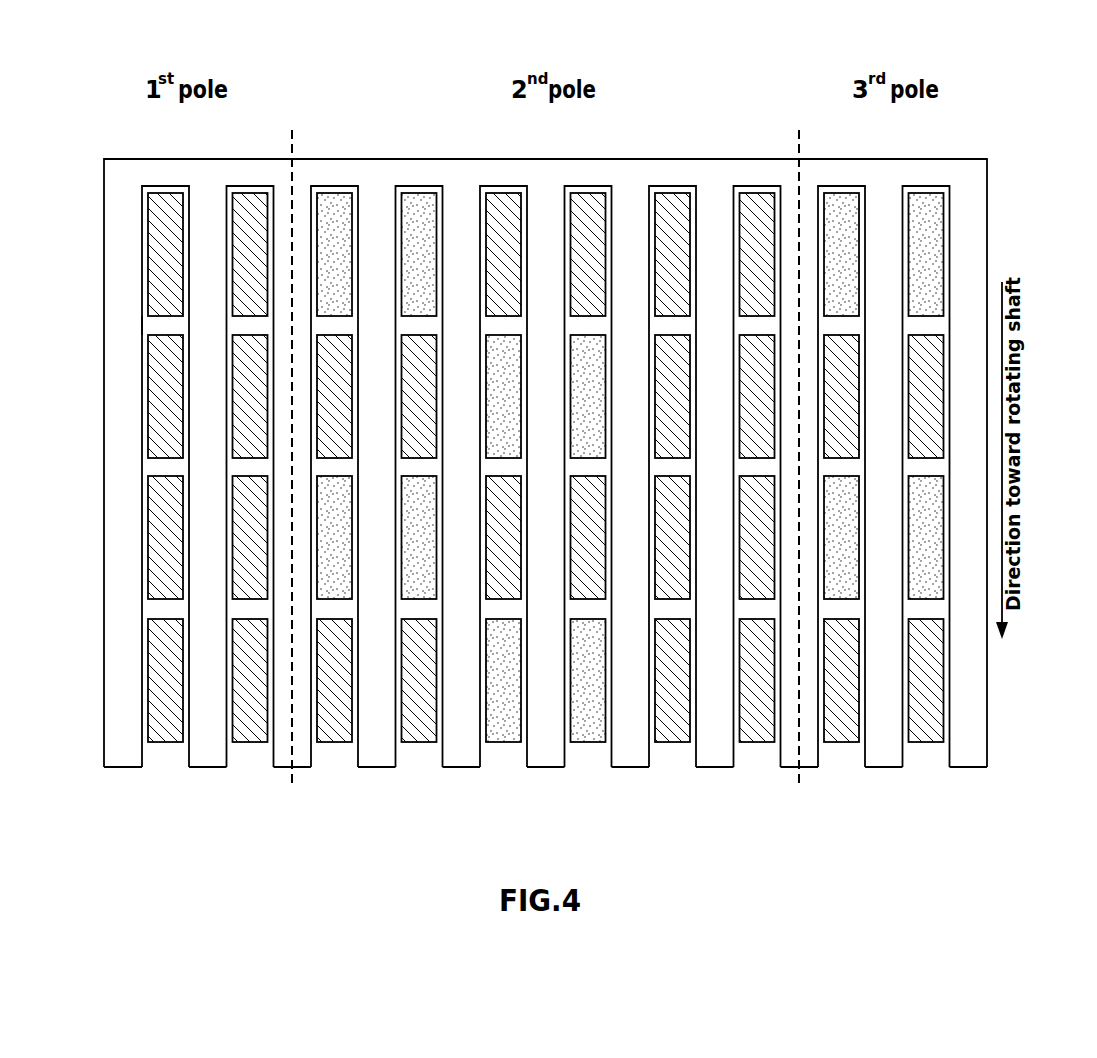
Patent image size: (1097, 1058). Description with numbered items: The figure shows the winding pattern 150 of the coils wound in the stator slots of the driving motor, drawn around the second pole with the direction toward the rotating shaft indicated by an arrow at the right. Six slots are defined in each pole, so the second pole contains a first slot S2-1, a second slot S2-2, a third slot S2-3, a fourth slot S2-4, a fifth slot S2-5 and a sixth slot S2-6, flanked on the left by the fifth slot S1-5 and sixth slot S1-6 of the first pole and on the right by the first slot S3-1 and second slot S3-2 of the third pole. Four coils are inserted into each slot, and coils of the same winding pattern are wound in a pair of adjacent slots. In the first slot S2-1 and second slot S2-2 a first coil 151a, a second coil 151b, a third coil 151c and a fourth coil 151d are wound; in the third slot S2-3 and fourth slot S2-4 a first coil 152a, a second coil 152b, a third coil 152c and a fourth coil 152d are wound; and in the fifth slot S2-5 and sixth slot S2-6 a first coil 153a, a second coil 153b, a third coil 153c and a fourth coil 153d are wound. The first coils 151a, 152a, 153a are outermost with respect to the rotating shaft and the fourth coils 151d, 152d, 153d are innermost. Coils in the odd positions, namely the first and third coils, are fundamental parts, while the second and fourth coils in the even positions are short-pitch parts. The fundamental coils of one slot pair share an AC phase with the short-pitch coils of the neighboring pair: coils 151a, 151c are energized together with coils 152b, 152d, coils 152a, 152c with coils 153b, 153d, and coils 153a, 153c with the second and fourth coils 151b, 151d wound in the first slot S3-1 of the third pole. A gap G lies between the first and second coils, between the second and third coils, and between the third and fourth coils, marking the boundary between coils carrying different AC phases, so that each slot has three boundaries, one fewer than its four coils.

The winding pattern 150 is at (980, 58).
The first coil 151a is at (408, 203).
The second coil 151b is at (421, 352).
The third coil 151c is at (418, 597).
The fourth coil 151d is at (411, 741).
The first coil 152a is at (581, 200).
The second coil 152b is at (591, 352).
The third coil 152c is at (590, 597).
The fourth coil 152d is at (586, 741).
The first coil 153a is at (251, 203).
The second coil 153b is at (247, 428).
The third coil 153c is at (247, 568).
The fourth coil 153d is at (247, 710).
The gap G is at (136, 322).
The fifth slot S1-5 is at (143, 767).
The sixth slot S1-6 is at (227, 767).
The first slot S2-1 is at (312, 767).
The second slot S2-2 is at (396, 767).
The third slot S2-3 is at (481, 767).
The fourth slot S2-4 is at (565, 767).
The fifth slot S2-5 is at (650, 767).
The sixth slot S2-6 is at (734, 767).
The first slot S3-1 is at (819, 767).
The second slot S3-2 is at (903, 767).